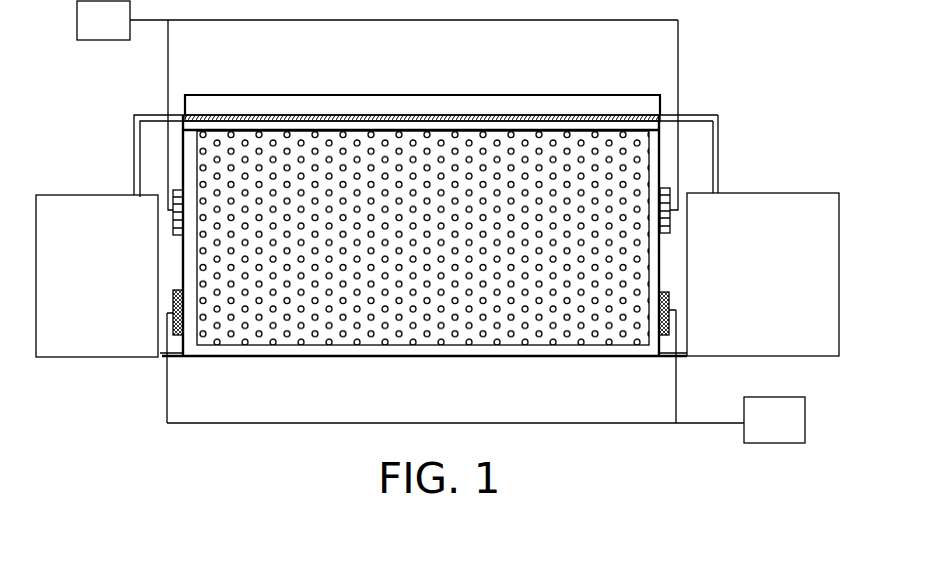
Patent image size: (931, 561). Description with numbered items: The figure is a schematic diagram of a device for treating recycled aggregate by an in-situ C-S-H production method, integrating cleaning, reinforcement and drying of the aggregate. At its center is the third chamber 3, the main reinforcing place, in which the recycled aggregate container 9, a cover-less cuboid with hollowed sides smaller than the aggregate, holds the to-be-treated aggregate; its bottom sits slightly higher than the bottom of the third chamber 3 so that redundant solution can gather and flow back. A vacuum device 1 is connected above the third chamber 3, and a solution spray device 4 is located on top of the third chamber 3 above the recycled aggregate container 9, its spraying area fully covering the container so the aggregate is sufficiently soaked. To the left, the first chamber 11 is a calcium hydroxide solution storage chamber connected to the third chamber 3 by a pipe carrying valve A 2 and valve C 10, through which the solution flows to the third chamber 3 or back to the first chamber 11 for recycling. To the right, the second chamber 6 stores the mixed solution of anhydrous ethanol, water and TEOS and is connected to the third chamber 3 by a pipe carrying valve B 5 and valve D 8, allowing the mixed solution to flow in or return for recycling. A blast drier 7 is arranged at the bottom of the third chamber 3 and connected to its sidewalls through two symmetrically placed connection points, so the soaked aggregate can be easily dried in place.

The vacuum device 1 is at (377, 118).
The valve A 2 is at (183, 117).
The third chamber 3 is at (361, 94).
The solution spray device 4 is at (437, 117).
The valve B 5 is at (661, 117).
The second chamber 6 is at (763, 274).
The blast drier 7 is at (486, 420).
The valve D 8 is at (659, 354).
The recycled aggregate container 9 is at (398, 361).
The valve C 10 is at (183, 356).
The first chamber 11 is at (97, 276).